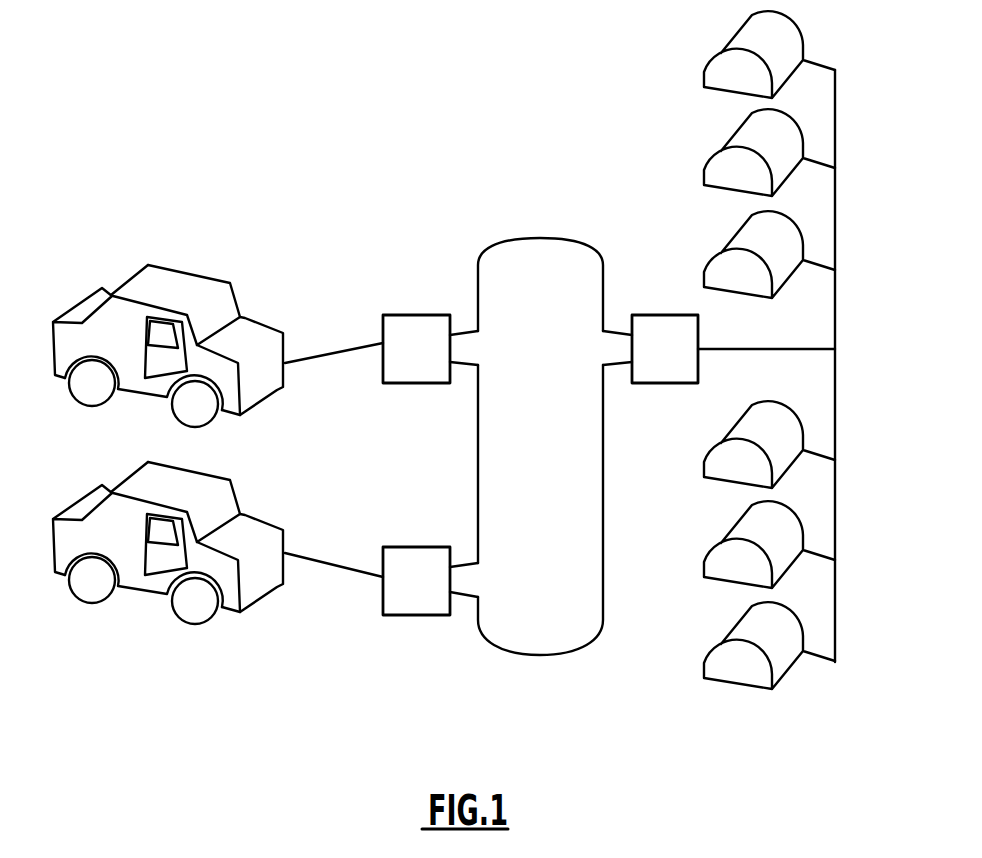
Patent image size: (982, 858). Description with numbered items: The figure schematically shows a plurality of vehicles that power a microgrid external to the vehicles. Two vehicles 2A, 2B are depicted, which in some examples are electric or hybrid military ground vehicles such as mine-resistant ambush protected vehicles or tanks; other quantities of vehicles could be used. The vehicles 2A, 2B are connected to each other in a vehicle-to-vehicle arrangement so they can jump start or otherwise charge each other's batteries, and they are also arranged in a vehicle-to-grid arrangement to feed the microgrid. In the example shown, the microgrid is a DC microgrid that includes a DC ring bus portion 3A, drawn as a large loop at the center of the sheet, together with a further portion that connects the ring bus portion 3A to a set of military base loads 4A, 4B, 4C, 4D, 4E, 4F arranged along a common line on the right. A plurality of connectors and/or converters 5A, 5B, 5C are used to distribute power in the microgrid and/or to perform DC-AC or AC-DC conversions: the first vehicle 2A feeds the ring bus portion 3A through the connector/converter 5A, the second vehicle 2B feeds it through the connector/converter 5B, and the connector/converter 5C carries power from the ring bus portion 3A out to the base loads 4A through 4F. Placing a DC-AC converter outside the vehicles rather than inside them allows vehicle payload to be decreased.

The vehicle 2A is at (92, 305).
The vehicle 2B is at (92, 502).
The DC ring bus portion 3A is at (517, 238).
The connector and/or converter 5A is at (430, 364).
The connector and/or converter 5B is at (430, 595).
The connector and/or converter 5C is at (678, 364).
The military base load 4A is at (720, 51).
The military base load 4B is at (720, 149).
The military base load 4C is at (720, 251).
The military base load 4D is at (720, 441).
The military base load 4E is at (720, 541).
The military base load 4F is at (720, 642).